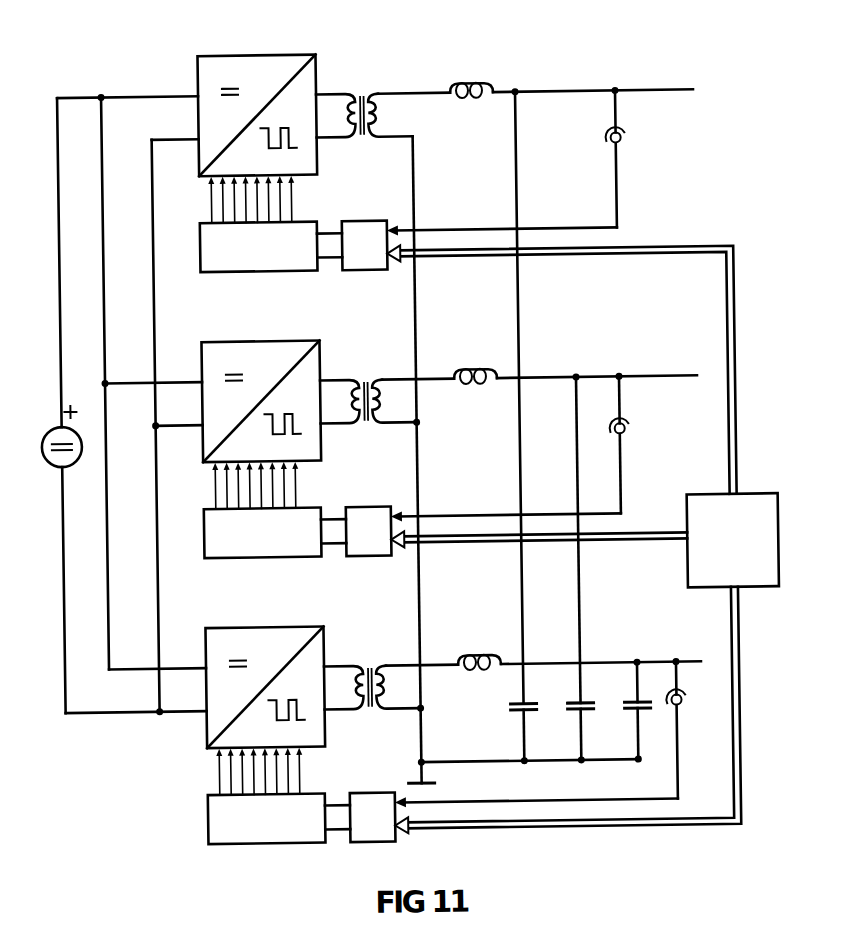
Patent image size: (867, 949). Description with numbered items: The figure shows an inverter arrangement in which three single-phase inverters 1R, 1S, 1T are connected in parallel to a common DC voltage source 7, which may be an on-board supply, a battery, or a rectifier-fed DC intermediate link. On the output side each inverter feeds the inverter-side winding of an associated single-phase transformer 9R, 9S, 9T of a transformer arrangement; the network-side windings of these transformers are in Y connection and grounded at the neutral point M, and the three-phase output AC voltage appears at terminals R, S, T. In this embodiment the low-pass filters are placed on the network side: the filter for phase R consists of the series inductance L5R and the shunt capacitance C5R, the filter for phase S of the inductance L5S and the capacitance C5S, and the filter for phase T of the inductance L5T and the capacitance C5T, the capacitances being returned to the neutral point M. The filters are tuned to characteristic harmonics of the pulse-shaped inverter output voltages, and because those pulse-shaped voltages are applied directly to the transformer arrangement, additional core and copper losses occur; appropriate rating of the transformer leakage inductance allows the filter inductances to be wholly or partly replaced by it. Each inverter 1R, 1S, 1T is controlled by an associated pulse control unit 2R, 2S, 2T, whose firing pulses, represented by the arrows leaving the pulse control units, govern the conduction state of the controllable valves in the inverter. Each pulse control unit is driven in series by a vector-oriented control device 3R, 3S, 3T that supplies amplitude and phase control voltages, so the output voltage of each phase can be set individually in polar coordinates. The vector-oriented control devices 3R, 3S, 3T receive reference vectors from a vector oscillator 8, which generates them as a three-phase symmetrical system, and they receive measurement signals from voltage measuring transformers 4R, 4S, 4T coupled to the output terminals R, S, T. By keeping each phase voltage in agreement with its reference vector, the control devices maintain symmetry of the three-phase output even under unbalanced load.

The single-phase inverter 1R is at (257, 60).
The single-phase inverter 1S is at (264, 346).
The single-phase inverter 1T is at (254, 634).
The pulse control unit 2R is at (273, 260).
The pulse control unit 2S is at (274, 546).
The pulse control unit 2T is at (280, 832).
The vector-oriented control device 3R is at (383, 255).
The vector-oriented control device 3S is at (382, 541).
The vector-oriented control device 3T is at (383, 829).
The measuring transformer 4R is at (625, 144).
The measuring transformer 4S is at (622, 435).
The measuring transformer 4T is at (677, 708).
The single-phase transformer 9R is at (360, 87).
The single-phase transformer 9S is at (365, 369).
The single-phase transformer 9T is at (359, 659).
The inductance L5R is at (462, 78).
The inductance L5S is at (463, 370).
The inductance L5T is at (459, 653).
The capacitance C5R is at (509, 716).
The capacitance C5S is at (566, 716).
The capacitance C5T is at (622, 715).
The DC voltage source 7 is at (76, 456).
The vector oscillator 8 is at (740, 564).
The neutral point M is at (429, 786).
The output terminal R is at (608, 90).
The output terminal S is at (608, 380).
The output terminal T is at (609, 662).